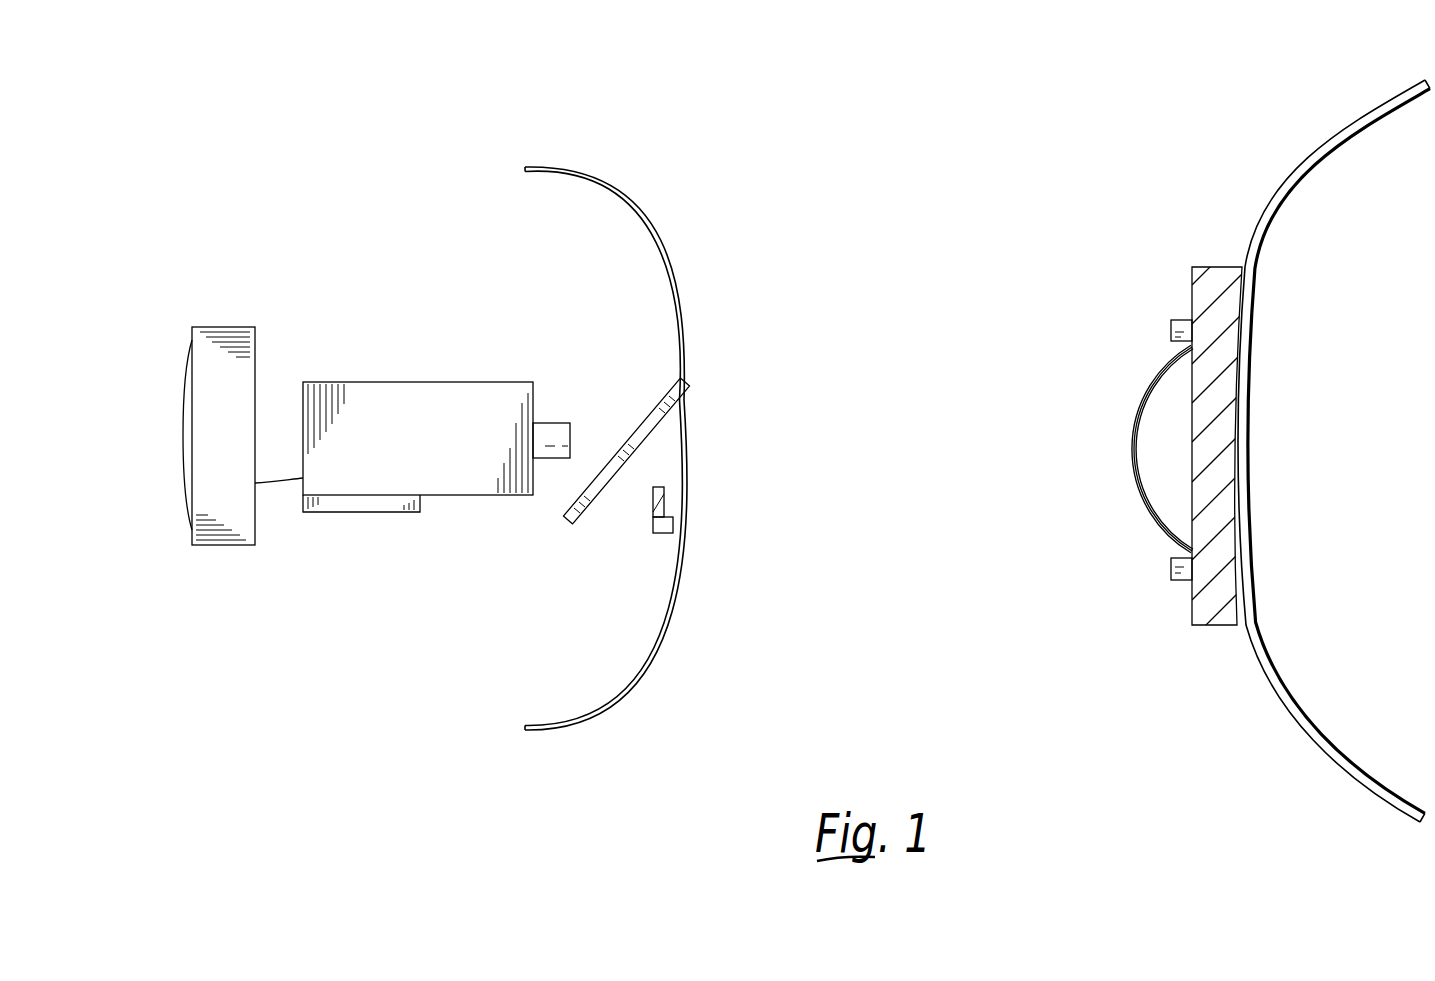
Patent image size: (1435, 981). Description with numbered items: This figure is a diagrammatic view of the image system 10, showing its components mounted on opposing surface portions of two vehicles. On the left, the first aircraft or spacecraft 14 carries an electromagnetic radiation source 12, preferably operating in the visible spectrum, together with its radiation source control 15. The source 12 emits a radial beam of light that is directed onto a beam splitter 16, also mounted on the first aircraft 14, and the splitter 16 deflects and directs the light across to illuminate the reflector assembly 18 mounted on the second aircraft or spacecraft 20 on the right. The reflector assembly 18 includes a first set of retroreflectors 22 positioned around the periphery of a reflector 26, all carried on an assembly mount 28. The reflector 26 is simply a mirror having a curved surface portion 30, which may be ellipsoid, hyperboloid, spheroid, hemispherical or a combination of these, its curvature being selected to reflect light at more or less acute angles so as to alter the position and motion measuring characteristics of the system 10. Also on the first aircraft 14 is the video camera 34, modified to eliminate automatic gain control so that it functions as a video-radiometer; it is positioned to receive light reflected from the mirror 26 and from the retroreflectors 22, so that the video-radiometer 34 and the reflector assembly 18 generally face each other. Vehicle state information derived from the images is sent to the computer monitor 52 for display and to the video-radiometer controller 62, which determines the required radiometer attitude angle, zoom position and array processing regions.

The image system 10 is at (880, 130).
The electromagnetic radiation source 12 is at (645, 526).
The first aircraft or spacecraft 14 is at (590, 172).
The radiation source control 15 is at (665, 540).
The beam splitter 16 is at (691, 338).
The reflector assembly 18 is at (1180, 258).
The second aircraft or spacecraft 20 is at (1255, 688).
The first set of retroreflectors 22 is at (1170, 327).
The reflector 26 is at (1160, 364).
The assembly mount 28 is at (1222, 267).
The curved surface portion 30 is at (1132, 425).
The video camera 34 is at (423, 382).
The computer monitor 52 is at (240, 545).
The video-radiometer controller 62 is at (375, 512).